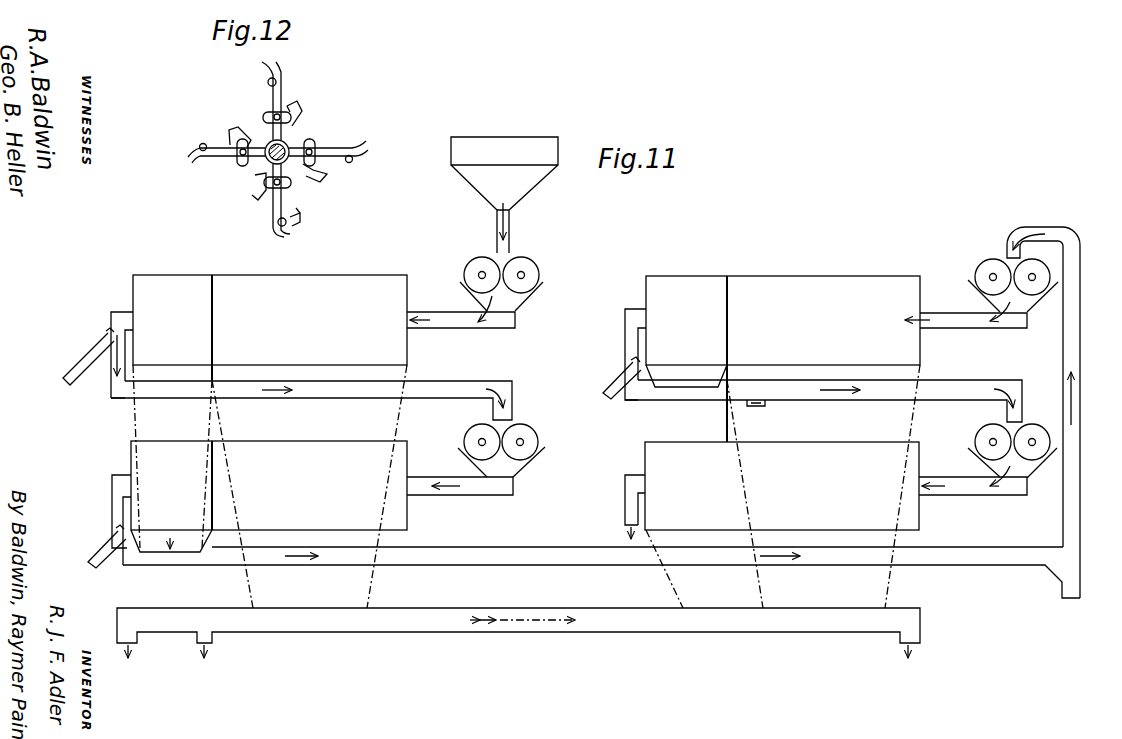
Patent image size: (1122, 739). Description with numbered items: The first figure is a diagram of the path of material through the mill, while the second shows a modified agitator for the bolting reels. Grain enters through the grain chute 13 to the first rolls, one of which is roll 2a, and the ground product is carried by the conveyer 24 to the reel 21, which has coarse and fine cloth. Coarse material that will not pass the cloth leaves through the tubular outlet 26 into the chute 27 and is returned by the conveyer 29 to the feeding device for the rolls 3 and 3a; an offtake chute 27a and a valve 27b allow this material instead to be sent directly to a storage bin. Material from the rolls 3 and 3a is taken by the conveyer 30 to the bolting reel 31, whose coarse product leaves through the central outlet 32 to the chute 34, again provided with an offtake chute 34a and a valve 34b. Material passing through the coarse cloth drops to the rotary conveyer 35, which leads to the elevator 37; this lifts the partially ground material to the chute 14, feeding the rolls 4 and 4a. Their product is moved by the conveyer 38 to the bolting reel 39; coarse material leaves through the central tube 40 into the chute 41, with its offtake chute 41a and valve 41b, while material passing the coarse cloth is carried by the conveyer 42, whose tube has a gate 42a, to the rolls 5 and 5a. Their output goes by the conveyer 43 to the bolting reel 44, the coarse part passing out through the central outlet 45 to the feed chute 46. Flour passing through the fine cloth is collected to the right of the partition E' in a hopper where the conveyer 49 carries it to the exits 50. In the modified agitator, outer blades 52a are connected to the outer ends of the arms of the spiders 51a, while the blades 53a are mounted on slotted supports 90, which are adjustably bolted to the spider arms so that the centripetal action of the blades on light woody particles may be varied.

In FIG. 11, the grain chute 13 is at (510, 238).
In FIG. 11, the roll 2a is at (530, 265).
In FIG. 11, the conveyer 24 is at (445, 317).
In FIG. 11, the reel 21 is at (270, 327).
In FIG. 11, the tubular outlet 26 is at (127, 312).
In FIG. 11, the chute 27 is at (112, 380).
In FIG. 11, the offtake chute 27a is at (87, 356).
In FIG. 11, the valve 27b is at (108, 333).
In FIG. 11, the conveyer 29 is at (343, 394).
In FIG. 11, the partition E' is at (526, 486).
In FIG. 11, the roll 3 is at (476, 430).
In FIG. 11, the roll 3a is at (530, 432).
In FIG. 11, the conveyer 30 is at (488, 491).
In FIG. 11, the bolting reel 31 is at (269, 496).
In FIG. 11, the central outlet 32 is at (127, 485).
In FIG. 11, the chute 34 is at (112, 510).
In FIG. 11, the offtake chute 34a is at (103, 548).
In FIG. 11, the valve 34b is at (118, 530).
In FIG. 11, the rotary conveyer 35 is at (476, 560).
In FIG. 11, the conveyer 49 is at (457, 627).
In FIG. 11, the exits 50 is at (197, 637).
In FIG. 11, the bolting reel 39 is at (783, 359).
In FIG. 11, the central tube 40 is at (628, 312).
In FIG. 11, the chute 41 is at (627, 347).
In FIG. 11, the offtake chute 41a is at (617, 380).
In FIG. 11, the valve 41b is at (633, 362).
In FIG. 11, the conveyer 42 is at (838, 397).
In FIG. 11, the gate 42a is at (755, 406).
In FIG. 11, the bolting reel 44 is at (782, 486).
In FIG. 11, the central outlet 45 is at (636, 481).
In FIG. 11, the feed chute 46 is at (626, 510).
In FIG. 11, the conveyer 43 is at (983, 493).
In FIG. 11, the roll 5 is at (978, 428).
In FIG. 11, the roll 5a is at (1033, 426).
In FIG. 11, the conveyer 38 is at (946, 316).
In FIG. 11, the roll 4 is at (978, 266).
In FIG. 11, the roll 4a is at (1033, 264).
In FIG. 11, the chute 14 is at (1038, 229).
In FIG. 11, the elevator 37 is at (1081, 525).
In FIG. 12, the supports 90 is at (267, 116).
In FIG. 12, the outer blades 52a is at (344, 145).
In FIG. 12, the spiders 51a is at (286, 196).
In FIG. 12, the blades 53a is at (265, 202).